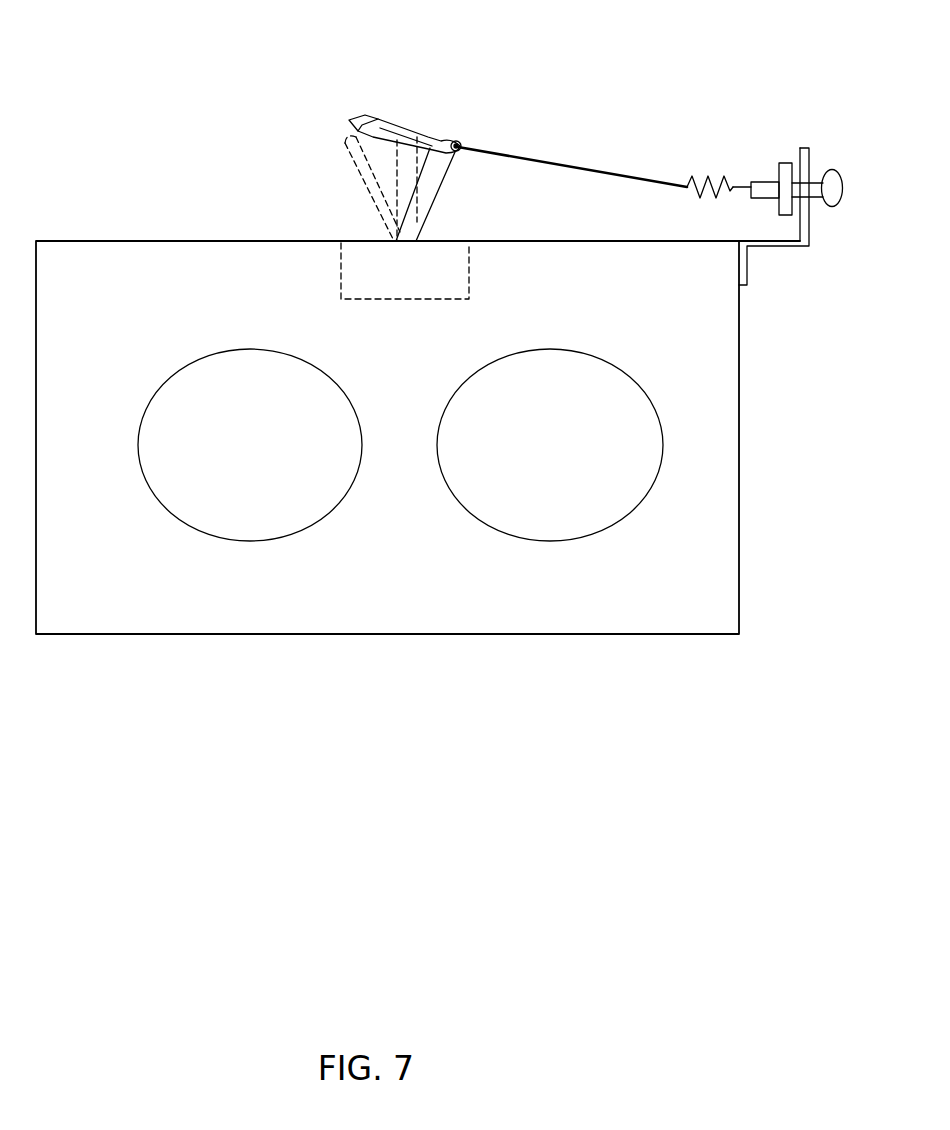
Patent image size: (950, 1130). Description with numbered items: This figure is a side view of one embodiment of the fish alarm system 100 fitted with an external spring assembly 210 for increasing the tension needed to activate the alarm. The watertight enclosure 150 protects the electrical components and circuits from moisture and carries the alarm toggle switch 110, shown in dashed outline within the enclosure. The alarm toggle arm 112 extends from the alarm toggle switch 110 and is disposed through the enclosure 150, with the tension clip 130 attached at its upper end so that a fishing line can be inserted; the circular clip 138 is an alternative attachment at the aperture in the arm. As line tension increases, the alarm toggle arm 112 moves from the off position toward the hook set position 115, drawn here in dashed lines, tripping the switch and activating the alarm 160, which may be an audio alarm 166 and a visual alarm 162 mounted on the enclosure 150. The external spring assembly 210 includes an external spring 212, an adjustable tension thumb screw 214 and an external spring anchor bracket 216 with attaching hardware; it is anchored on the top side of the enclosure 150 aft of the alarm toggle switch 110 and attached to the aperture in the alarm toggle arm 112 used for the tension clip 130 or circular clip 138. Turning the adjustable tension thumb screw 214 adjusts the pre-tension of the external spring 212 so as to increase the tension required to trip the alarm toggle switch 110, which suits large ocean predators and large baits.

The fish alarm system 100 is at (443, 866).
The alarm toggle switch 110 is at (420, 249).
The alarm toggle arm 112 is at (458, 142).
The hook set position 115 is at (342, 152).
The tension clip 130 is at (378, 120).
The circular clip 138 is at (436, 142).
The enclosure 150 is at (650, 612).
The alarm 160 is at (214, 516).
The visual alarm 162 is at (577, 507).
The audio alarm 166 is at (287, 520).
The external spring assembly 210 is at (671, 167).
The external spring 212 is at (708, 174).
The adjustable tension thumb screw 214 is at (840, 171).
The external spring anchor bracket 216 is at (805, 148).